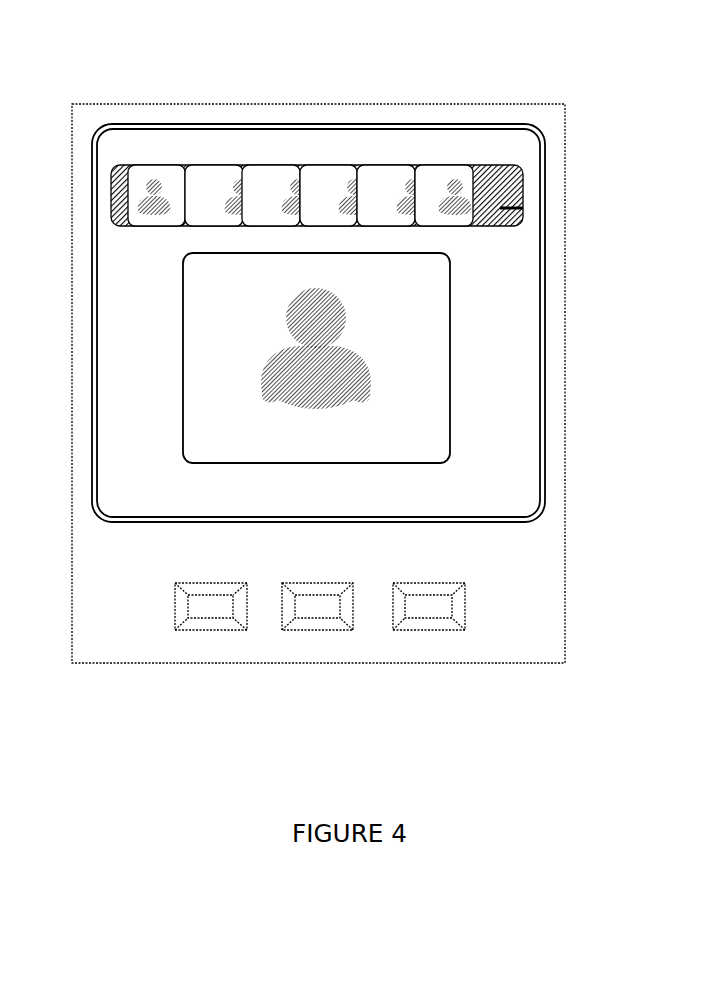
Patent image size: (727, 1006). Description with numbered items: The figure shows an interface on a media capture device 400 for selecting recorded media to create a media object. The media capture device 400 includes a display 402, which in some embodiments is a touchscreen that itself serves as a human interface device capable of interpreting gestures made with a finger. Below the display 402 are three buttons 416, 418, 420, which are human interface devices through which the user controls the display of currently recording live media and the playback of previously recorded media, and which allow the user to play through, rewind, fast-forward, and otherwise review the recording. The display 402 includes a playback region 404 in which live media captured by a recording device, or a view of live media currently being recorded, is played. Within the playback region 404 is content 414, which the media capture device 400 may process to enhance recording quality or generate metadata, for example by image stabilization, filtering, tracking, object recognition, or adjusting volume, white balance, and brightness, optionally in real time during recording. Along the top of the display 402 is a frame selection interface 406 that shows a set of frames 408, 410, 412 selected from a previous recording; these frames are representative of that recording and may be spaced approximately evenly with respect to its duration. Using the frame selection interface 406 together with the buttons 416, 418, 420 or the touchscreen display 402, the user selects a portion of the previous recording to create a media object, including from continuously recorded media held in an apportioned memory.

The media capture device 400 is at (318, 341).
The display 402 is at (485, 142).
The playback region 404 is at (415, 328).
The frame selection interface 406 is at (520, 165).
The frame 408 is at (132, 173).
The frame 410 is at (188, 173).
The frame 412 is at (248, 173).
The content 414 is at (267, 360).
The button 416 is at (188, 630).
The button 418 is at (295, 630).
The button 420 is at (408, 630).